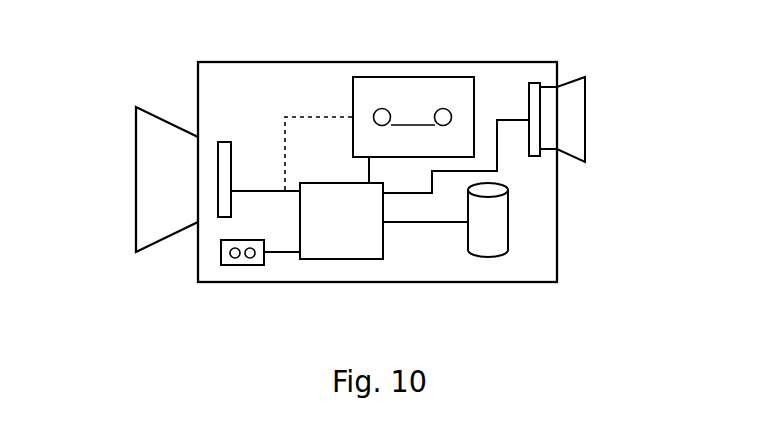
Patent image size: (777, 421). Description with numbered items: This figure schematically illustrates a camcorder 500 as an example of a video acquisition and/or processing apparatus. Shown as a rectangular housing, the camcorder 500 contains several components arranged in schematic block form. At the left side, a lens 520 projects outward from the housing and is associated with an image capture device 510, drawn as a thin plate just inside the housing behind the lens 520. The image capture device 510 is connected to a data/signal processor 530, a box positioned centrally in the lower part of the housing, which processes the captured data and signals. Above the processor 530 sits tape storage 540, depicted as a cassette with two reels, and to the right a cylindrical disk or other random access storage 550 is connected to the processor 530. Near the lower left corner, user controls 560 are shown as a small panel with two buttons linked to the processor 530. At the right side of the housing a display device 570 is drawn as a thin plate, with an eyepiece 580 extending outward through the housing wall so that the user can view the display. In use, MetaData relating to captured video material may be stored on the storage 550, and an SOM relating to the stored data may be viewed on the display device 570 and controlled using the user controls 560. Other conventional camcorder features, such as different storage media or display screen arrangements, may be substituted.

The camcorder 500 is at (516, 62).
The image capture device 510 is at (231, 152).
The lens 520 is at (135, 132).
The data/signal processor 530 is at (385, 247).
The tape storage 540 is at (413, 77).
The disk or other random access storage 550 is at (508, 222).
The user controls 560 is at (222, 254).
The display device 570 is at (533, 158).
The eyepiece 580 is at (586, 115).